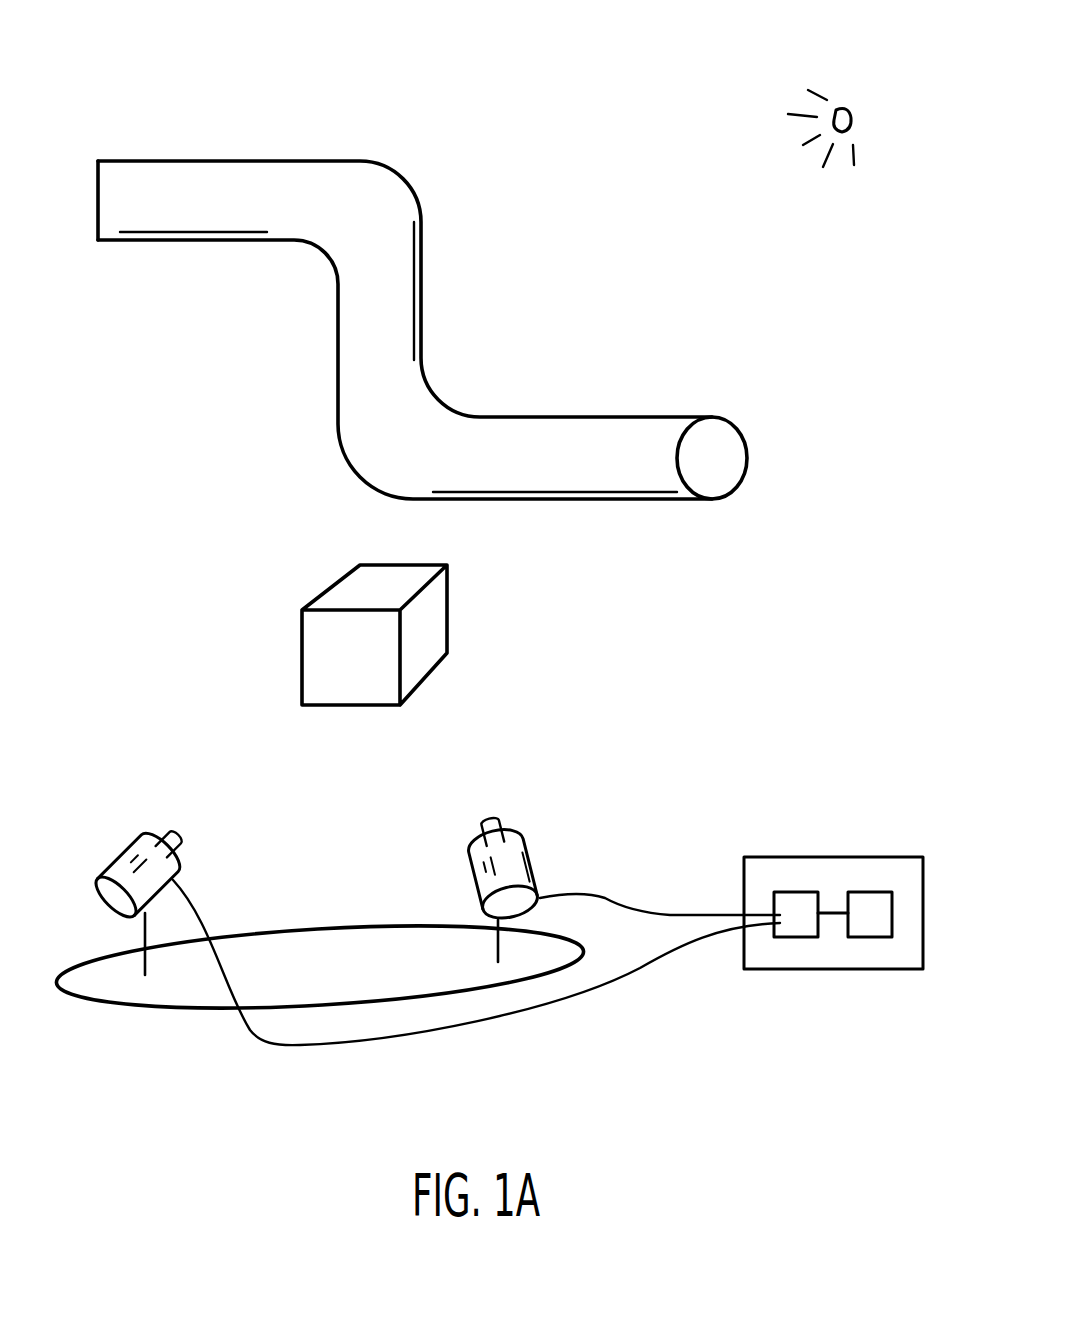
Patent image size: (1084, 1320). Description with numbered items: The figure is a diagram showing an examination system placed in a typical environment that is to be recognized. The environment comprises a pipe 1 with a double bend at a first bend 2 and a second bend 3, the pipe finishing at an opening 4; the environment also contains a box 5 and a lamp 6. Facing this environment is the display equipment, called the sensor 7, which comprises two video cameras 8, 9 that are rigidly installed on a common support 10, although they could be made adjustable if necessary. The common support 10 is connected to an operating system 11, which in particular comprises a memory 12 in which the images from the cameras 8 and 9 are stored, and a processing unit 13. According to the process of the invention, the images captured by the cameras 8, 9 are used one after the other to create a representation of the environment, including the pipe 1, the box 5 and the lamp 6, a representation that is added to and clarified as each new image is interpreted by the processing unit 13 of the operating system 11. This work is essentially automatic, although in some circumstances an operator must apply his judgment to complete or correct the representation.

The pipe 1 is at (450, 299).
The first bend 2 is at (368, 214).
The second bend 3 is at (400, 447).
The opening 4 is at (727, 445).
The box 5 is at (480, 600).
The lamp 6 is at (885, 90).
The sensor 7 is at (248, 795).
The video camera 8 is at (115, 855).
The video camera 9 is at (530, 845).
The common support 10 is at (365, 940).
The operating system 11 is at (833, 897).
The memory 12 is at (800, 934).
The processing unit 13 is at (878, 934).